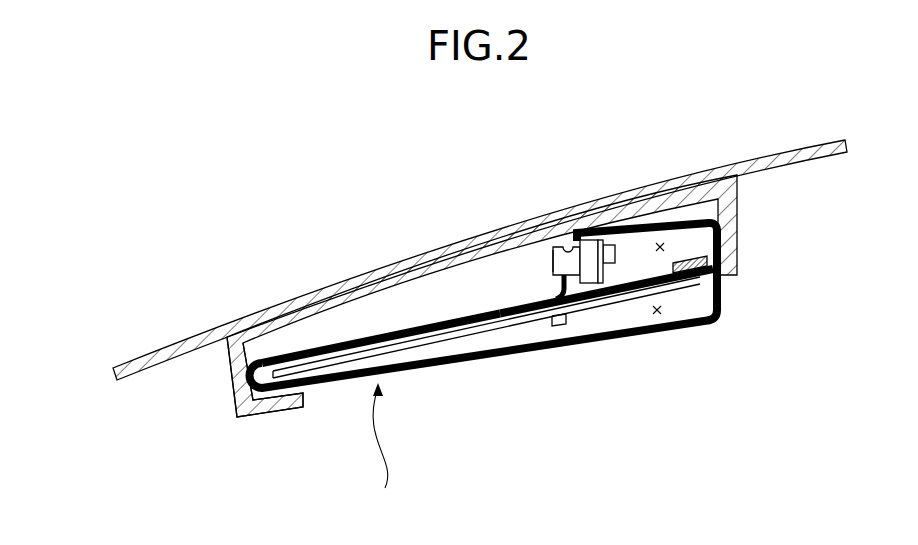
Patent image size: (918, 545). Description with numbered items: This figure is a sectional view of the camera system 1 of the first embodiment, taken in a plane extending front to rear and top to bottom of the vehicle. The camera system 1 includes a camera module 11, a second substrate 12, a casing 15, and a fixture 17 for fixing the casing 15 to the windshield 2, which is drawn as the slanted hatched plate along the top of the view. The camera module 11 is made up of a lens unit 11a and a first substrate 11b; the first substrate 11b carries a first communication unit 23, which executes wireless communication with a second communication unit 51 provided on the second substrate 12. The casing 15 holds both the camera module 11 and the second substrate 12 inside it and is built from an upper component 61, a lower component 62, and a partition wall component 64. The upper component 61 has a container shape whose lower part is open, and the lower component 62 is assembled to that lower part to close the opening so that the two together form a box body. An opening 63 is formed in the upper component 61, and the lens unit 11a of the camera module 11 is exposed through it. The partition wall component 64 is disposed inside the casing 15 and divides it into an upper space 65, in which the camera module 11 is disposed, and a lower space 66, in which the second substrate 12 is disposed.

The camera system 1 is at (369, 512).
The windshield 2 is at (178, 340).
The camera module 11 is at (580, 292).
The lens unit 11a is at (552, 253).
The first substrate 11b is at (600, 240).
The second substrate 12 is at (460, 338).
The casing 15 is at (723, 293).
The fixture 17 is at (240, 392).
The first communication unit 23 is at (551, 326).
The second communication unit 51 is at (618, 226).
The upper component 61 is at (413, 333).
The lower component 62 is at (411, 376).
The opening 63 is at (563, 247).
The partition wall component 64 is at (619, 292).
The upper space 65 is at (664, 247).
The lower space 66 is at (657, 312).